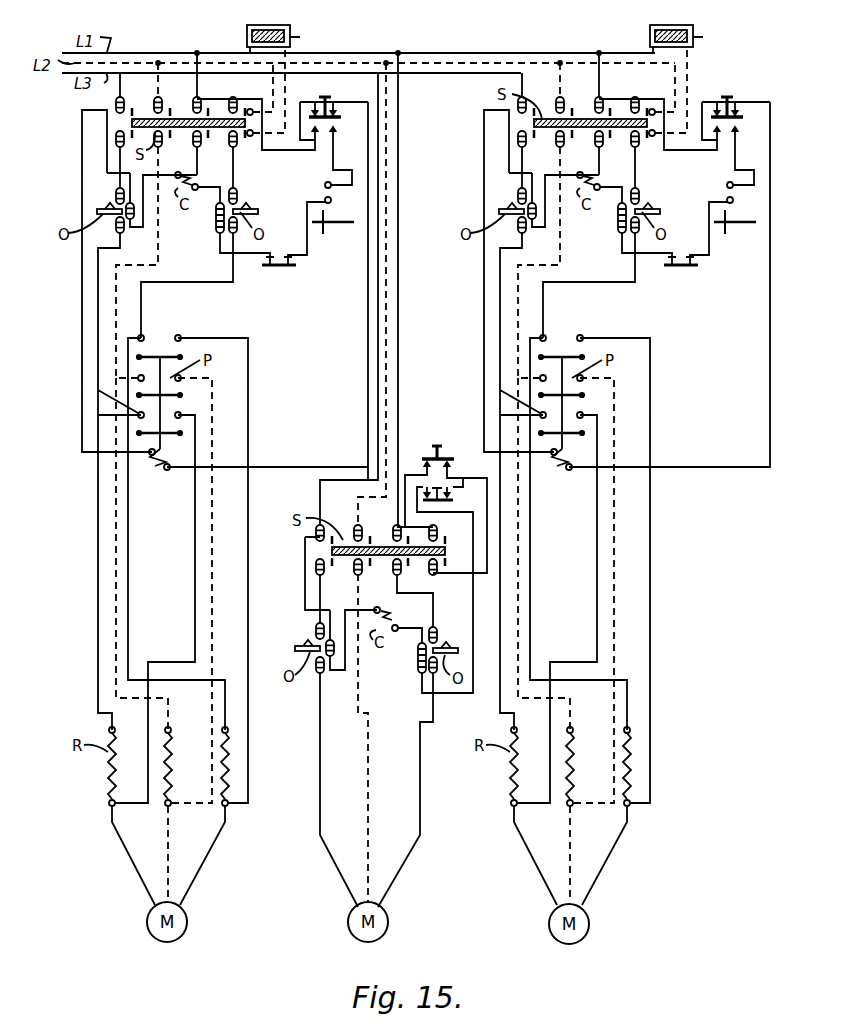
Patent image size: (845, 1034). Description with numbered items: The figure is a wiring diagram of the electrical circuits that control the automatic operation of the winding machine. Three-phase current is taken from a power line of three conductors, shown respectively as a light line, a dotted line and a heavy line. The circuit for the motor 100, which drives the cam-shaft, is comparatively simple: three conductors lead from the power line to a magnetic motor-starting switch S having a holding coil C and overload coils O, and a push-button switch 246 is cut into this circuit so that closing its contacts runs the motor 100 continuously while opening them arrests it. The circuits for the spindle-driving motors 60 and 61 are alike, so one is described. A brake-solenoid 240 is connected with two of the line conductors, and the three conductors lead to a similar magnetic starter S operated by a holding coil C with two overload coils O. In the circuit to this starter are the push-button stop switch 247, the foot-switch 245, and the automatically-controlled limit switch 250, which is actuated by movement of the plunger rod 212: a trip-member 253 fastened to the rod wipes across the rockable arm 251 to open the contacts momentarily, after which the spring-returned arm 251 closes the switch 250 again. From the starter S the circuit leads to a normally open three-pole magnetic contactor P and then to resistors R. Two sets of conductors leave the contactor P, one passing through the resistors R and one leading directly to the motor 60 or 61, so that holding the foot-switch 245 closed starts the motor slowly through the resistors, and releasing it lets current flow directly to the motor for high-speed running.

The brake-solenoid 240 is at (650, 38).
The foot-switch 245 is at (735, 107).
The limit switch 250 is at (728, 185).
The rockable arm 251 is at (742, 205).
The plunger rod 212 is at (738, 226).
The trip-member 253 is at (726, 238).
The push-button stop switch 247 is at (692, 272).
The push-button switch 246 is at (450, 452).
The motor 61 is at (187, 926).
The motor 100 is at (389, 930).
The motor 60 is at (590, 933).